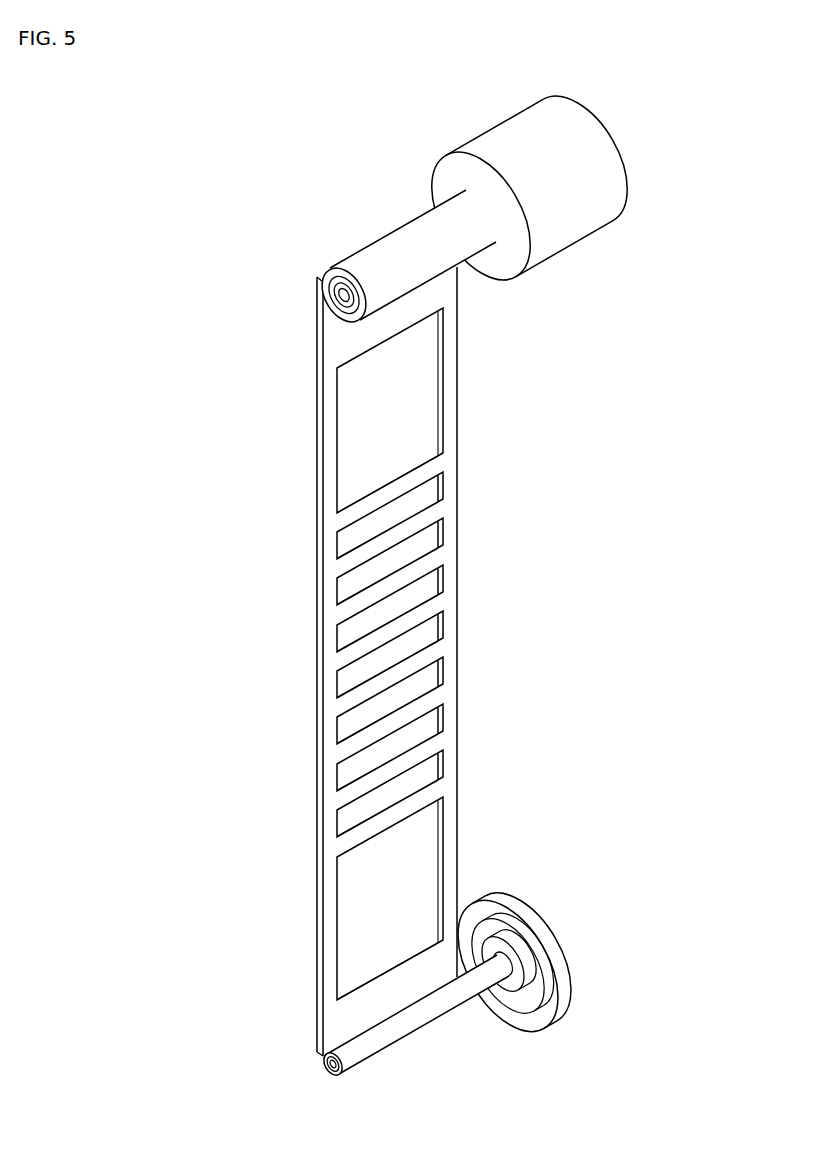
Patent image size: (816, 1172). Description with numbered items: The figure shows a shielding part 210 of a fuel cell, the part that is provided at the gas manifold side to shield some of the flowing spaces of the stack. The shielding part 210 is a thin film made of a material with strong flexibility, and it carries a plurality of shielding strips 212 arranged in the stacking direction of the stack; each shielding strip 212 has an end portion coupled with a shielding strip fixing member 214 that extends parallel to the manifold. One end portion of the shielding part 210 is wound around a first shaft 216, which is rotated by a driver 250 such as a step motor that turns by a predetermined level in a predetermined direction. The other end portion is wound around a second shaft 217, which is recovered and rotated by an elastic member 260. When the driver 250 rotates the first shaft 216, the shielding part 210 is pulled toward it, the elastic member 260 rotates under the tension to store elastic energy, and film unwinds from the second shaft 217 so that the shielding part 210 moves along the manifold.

The shielding part 210 is at (300, 462).
The shielding strips 212 is at (427, 568).
The shielding strip fixing member 214 is at (327, 417).
The first shaft 216 is at (335, 270).
The second shaft 217 is at (322, 1057).
The driver 250 is at (603, 190).
The elastic member 260 is at (560, 944).